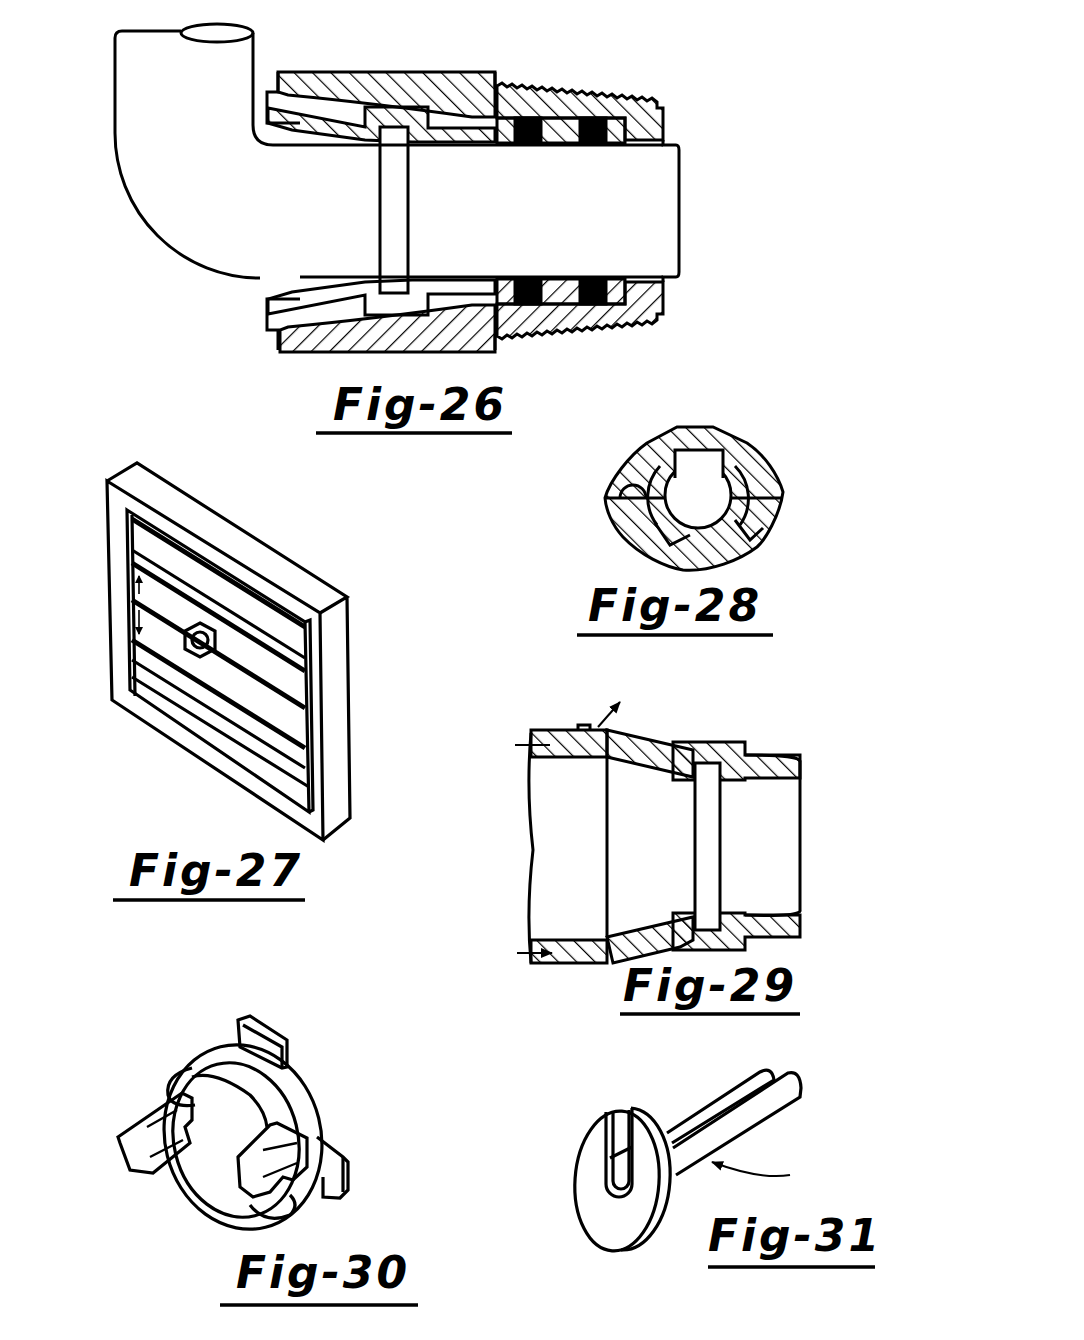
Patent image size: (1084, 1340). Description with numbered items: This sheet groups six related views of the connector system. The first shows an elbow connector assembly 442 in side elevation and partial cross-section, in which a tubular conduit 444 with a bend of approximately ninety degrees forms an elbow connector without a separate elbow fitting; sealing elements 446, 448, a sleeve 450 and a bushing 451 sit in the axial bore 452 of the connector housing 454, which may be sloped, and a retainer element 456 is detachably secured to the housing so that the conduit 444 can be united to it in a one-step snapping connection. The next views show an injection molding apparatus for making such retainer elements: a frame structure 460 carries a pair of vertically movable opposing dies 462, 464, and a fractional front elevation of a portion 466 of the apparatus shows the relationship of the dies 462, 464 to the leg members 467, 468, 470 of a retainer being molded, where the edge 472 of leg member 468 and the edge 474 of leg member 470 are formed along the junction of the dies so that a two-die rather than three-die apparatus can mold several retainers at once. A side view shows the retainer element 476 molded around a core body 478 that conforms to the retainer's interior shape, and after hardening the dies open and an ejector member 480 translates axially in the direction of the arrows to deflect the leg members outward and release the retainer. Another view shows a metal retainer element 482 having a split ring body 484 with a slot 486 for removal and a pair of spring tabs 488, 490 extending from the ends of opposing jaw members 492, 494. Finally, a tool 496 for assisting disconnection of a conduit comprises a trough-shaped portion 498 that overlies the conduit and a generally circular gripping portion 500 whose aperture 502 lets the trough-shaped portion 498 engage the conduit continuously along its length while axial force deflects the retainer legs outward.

In FIG. 26, the elbow connector assembly 442 is at (165, 247).
In FIG. 26, the tubular conduit 444 is at (157, 100).
In FIG. 26, the sealing element 446 is at (548, 143).
In FIG. 26, the sealing element 448 is at (625, 143).
In FIG. 26, the sleeve 450 is at (583, 275).
In FIG. 26, the bushing 451 is at (500, 143).
In FIG. 26, the axial bore 452 is at (437, 352).
In FIG. 26, the connector housing 454 is at (381, 70).
In FIG. 26, the retainer element 456 is at (454, 143).
In FIG. 27, the frame structure 460 is at (122, 657).
In FIG. 27, the die 462 is at (185, 580).
In FIG. 28, the die 462 is at (745, 457).
In FIG. 27, the die 464 is at (290, 727).
In FIG. 28, the die 464 is at (772, 505).
In FIG. 27, the portion of the apparatus 466 is at (223, 630).
In FIG. 28, the portion of the apparatus 466 is at (625, 453).
In FIG. 28, the leg member 467 is at (700, 452).
In FIG. 28, the leg member 468 is at (662, 523).
In FIG. 28, the leg member 470 is at (738, 518).
In FIG. 28, the edge 472 is at (612, 488).
In FIG. 28, the edge 474 is at (775, 473).
In FIG. 29, the retainer element 476 is at (705, 745).
In FIG. 28, the core body 478 is at (702, 517).
In FIG. 29, the core body 478 is at (672, 849).
In FIG. 29, the ejector member 480 is at (573, 733).
In FIG. 30, the retainer element 482 is at (317, 1077).
In FIG. 30, the split ring body 484 is at (287, 1110).
In FIG. 30, the slot 486 is at (255, 1215).
In FIG. 30, the spring tab 488 is at (348, 1180).
In FIG. 30, the spring tab 490 is at (171, 1068).
In FIG. 30, the jaw member 492 is at (200, 1203).
In FIG. 30, the jaw member 494 is at (137, 1153).
In FIG. 31, the tool 496 is at (777, 1172).
In FIG. 31, the trough-shaped portion 498 is at (705, 1103).
In FIG. 31, the gripping portion 500 is at (597, 1167).
In FIG. 31, the aperture 502 is at (618, 1115).